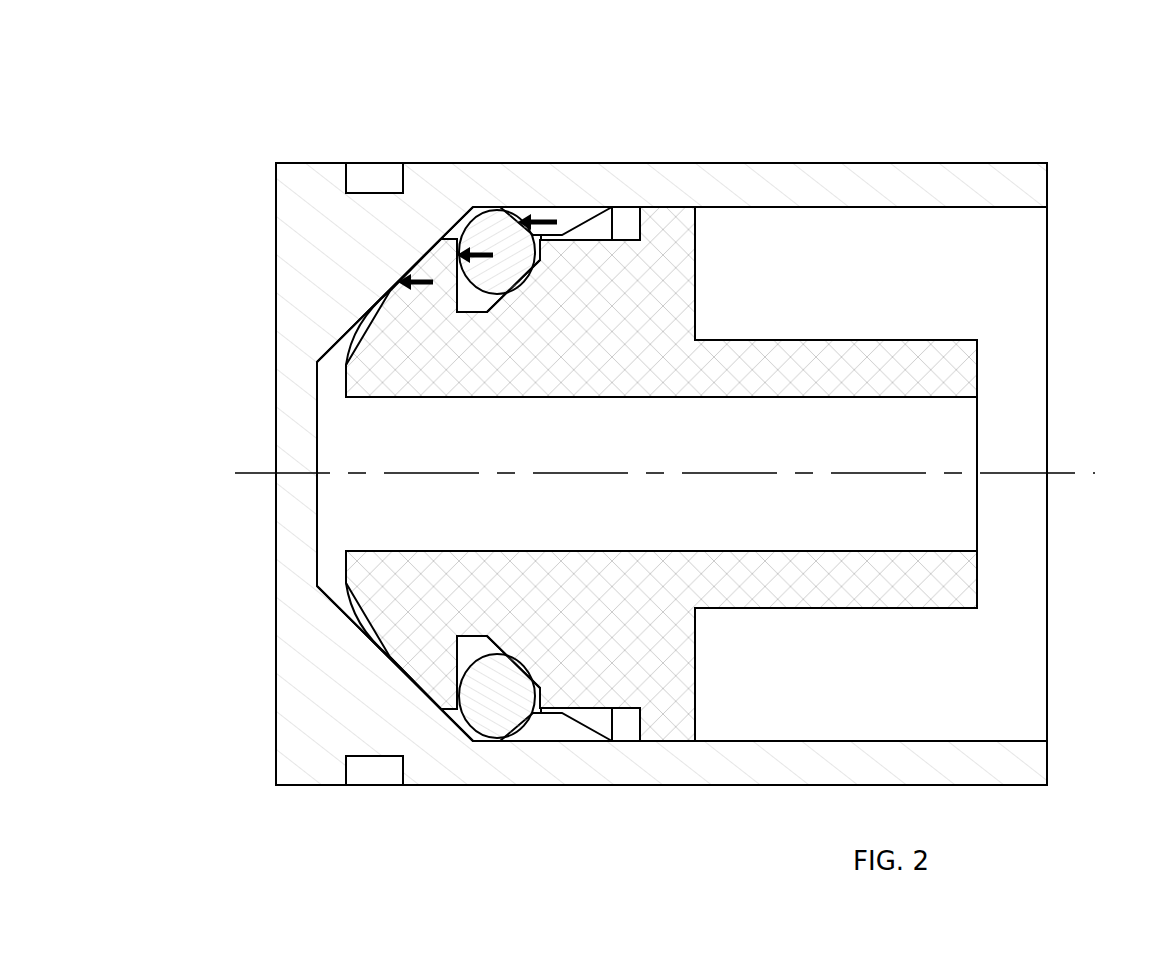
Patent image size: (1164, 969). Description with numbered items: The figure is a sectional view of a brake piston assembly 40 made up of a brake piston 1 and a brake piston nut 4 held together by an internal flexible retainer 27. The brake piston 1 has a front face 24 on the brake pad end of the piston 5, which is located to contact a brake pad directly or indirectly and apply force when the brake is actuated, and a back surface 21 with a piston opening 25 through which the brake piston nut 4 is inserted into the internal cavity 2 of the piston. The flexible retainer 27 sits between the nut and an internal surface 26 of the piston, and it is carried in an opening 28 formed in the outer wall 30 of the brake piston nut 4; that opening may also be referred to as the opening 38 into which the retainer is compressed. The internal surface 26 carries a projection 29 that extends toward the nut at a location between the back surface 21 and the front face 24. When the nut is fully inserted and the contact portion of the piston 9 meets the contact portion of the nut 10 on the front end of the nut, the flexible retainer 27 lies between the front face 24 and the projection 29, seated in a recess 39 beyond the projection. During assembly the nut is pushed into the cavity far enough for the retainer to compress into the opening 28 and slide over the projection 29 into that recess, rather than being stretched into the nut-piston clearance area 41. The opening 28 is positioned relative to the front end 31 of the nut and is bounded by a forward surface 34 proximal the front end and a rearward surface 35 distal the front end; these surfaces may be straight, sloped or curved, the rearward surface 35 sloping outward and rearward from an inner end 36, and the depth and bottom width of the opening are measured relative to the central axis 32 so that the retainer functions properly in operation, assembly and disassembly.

The brake piston assembly 40 is at (285, 125).
The brake piston 1 is at (388, 235).
The back surface 21 is at (1047, 180).
The front face 24 is at (276, 247).
The piston opening 25 is at (1047, 312).
The internal surface 26 is at (1000, 733).
The internal cavity 2 is at (940, 657).
The piston 5 is at (298, 722).
The front end 31 is at (362, 522).
The opening 28 is at (393, 293).
The contact portion of the piston 9 is at (395, 675).
The brake piston nut 4 is at (377, 613).
The contact portion of the nut 10 is at (395, 675).
The central axis 32 is at (1075, 471).
The inner end 36 is at (560, 318).
The opening 38 is at (540, 248).
The forward surface 34 is at (450, 650).
The rearward surface 35 is at (480, 658).
The projection 29 is at (563, 212).
The outer wall 30 is at (633, 236).
The nut-piston clearance area 41 is at (623, 727).
The recess 39 is at (477, 743).
The flexible retainer 27 is at (500, 235).